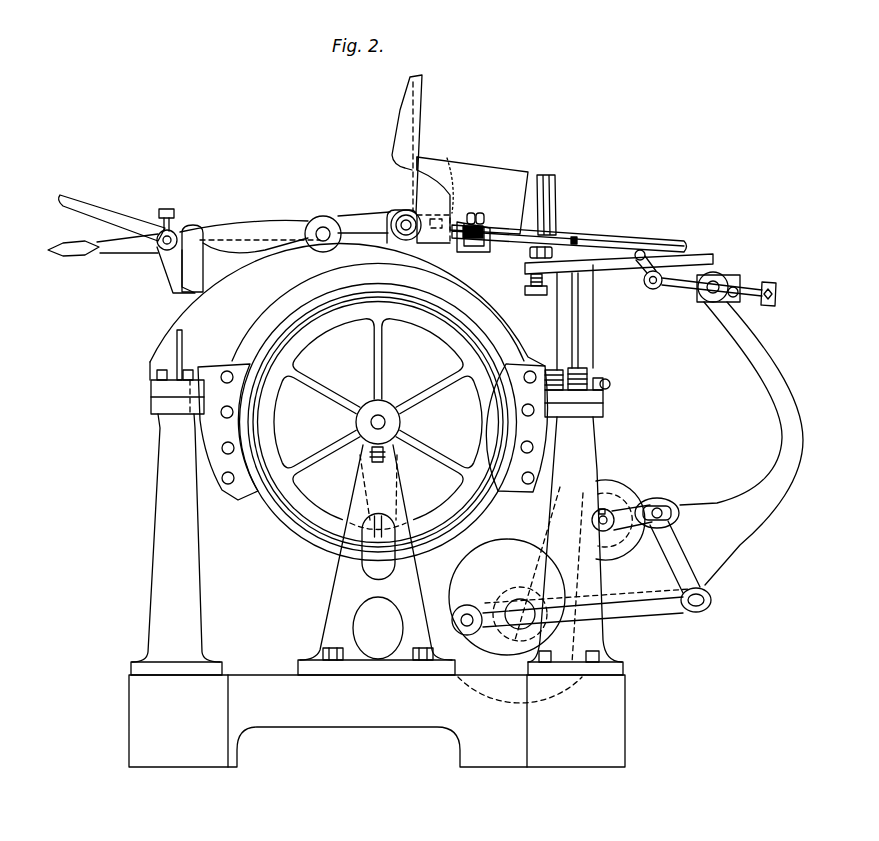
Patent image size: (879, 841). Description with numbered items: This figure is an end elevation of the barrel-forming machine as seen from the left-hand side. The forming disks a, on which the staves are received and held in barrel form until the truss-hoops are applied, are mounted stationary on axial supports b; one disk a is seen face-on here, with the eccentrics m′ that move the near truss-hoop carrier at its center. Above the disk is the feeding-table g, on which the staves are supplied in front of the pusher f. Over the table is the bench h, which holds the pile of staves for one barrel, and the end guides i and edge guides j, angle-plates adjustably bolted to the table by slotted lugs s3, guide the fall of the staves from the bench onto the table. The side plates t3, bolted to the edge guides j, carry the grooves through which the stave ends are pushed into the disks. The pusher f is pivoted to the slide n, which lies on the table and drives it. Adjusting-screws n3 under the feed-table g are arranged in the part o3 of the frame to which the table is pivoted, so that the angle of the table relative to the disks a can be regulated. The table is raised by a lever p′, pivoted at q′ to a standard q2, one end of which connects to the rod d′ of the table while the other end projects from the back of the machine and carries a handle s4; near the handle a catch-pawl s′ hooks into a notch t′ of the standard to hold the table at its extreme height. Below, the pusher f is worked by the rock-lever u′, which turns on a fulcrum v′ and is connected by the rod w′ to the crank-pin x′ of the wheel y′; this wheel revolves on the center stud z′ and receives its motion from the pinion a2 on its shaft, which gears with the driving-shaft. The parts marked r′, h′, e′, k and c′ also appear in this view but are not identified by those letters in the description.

The disks a is at (349, 371).
The wheel rim r′ is at (378, 422).
The axial supports b is at (378, 416).
The eccentrics m′ is at (385, 422).
The catch-pawl s′ is at (112, 216).
The handle s4 is at (100, 255).
The notch t′ is at (180, 259).
The lever p′ is at (244, 226).
The standard q2 is at (260, 256).
The pivot q′ is at (323, 225).
The arm h′ is at (364, 211).
The rod d′ is at (404, 240).
The side plates t3 is at (418, 243).
The plate e′ is at (422, 84).
The end guides i is at (472, 195).
The bench h is at (428, 153).
The edge guides j is at (454, 190).
The post k is at (554, 205).
The slotted lugs s3 is at (476, 250).
The pusher f is at (569, 234).
The feeding-table g is at (605, 260).
The adjusting-screws n3 is at (525, 291).
The pin c′ is at (641, 265).
The part of the frame o3 is at (635, 285).
The slide n is at (719, 281).
The rock-lever u′ is at (741, 443).
The pinion a2 is at (618, 520).
The fulcrum v′ is at (667, 500).
The rod w′ is at (597, 577).
The crank-pin x′ is at (467, 607).
The wheel y′ is at (507, 597).
The center stud z′ is at (520, 645).